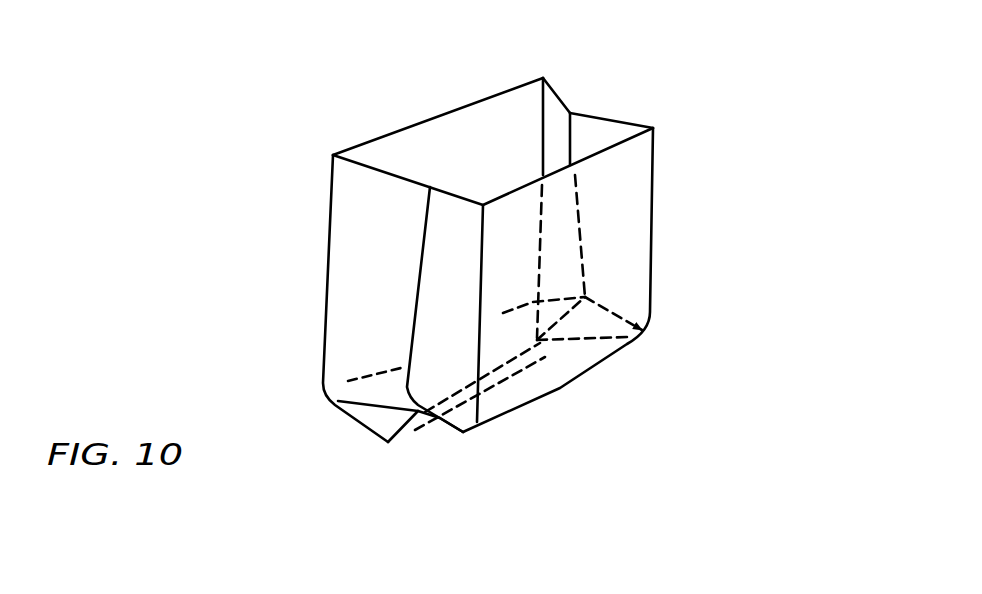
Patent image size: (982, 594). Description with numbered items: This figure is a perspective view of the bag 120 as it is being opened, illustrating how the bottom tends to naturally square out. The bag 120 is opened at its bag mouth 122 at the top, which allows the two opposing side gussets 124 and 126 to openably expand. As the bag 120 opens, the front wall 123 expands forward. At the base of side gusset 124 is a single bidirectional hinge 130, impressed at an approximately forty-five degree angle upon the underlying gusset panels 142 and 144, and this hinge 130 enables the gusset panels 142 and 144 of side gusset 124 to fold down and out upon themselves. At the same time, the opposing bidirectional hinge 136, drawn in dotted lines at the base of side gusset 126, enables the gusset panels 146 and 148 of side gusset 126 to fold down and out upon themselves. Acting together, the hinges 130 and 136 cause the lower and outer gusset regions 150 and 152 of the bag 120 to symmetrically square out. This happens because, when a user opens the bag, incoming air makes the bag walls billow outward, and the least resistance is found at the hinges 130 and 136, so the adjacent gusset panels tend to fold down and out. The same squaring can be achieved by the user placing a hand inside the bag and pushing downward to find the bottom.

The bag 120 is at (660, 169).
The bag mouth 122 is at (483, 107).
The front wall 123 is at (610, 242).
The side gusset 124 is at (457, 212).
The side gusset 126 is at (557, 140).
The bidirectional hinge 130 is at (425, 430).
The bidirectional hinge 136 is at (535, 334).
The gusset panel 142 is at (358, 257).
The gusset panel 144 is at (453, 252).
The gusset panel 146 is at (570, 113).
The gusset panel 148 is at (623, 132).
The lower and outer gusset region 150 is at (351, 381).
The lower and outer gusset region 152 is at (592, 320).